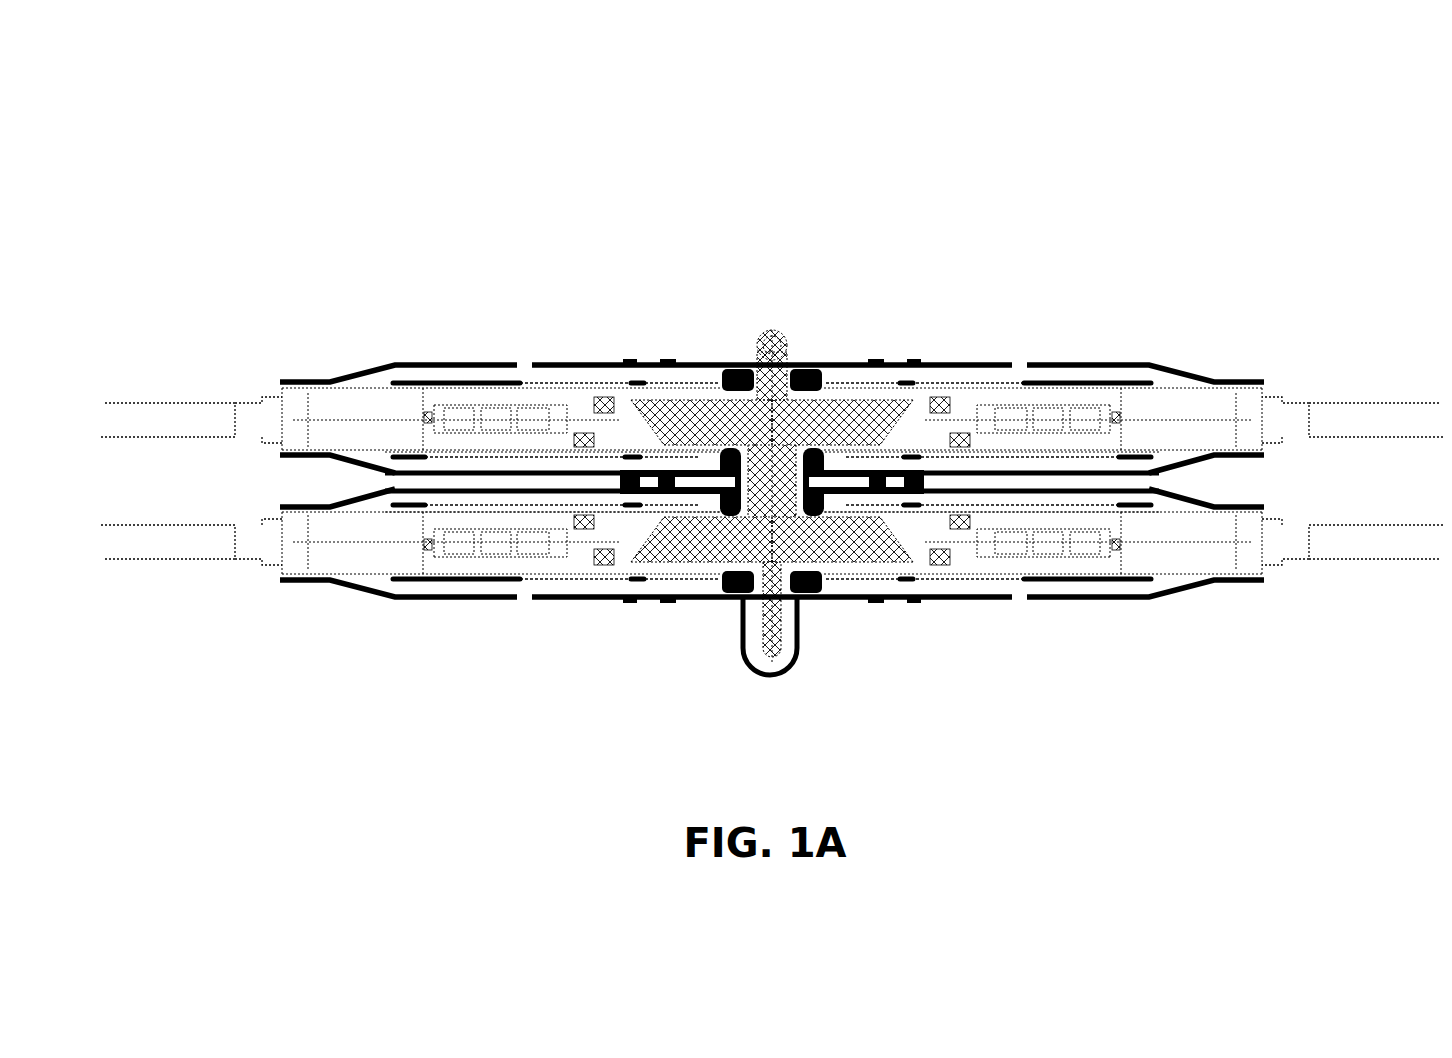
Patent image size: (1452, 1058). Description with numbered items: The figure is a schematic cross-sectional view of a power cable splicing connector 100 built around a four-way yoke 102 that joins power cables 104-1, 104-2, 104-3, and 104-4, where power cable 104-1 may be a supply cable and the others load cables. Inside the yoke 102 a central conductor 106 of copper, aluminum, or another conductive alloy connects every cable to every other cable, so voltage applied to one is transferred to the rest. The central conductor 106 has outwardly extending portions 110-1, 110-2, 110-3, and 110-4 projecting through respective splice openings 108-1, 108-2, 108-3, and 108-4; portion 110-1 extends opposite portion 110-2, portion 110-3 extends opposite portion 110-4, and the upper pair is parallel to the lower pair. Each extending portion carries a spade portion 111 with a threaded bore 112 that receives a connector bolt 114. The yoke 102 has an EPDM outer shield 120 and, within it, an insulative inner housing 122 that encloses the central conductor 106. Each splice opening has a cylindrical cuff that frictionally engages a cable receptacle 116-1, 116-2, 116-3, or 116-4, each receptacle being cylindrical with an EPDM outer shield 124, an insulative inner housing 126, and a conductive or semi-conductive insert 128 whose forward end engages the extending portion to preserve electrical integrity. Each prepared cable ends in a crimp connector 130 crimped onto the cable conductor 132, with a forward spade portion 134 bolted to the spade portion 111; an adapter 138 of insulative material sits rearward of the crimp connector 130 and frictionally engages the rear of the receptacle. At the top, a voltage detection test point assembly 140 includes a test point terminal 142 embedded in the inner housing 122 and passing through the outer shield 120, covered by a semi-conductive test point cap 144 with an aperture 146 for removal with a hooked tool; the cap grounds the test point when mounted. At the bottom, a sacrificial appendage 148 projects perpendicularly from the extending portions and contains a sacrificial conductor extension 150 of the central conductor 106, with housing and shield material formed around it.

The power cable splicing connector 100 is at (938, 245).
The four-way yoke 102 is at (817, 395).
The power cable 104-1 is at (195, 415).
The power cable 104-2 is at (1376, 412).
The power cable 104-3 is at (187, 557).
The power cable 104-4 is at (1360, 560).
The central conductor 106 is at (743, 582).
The splice opening 108-1 is at (709, 386).
The splice opening 108-2 is at (842, 388).
The splice opening 108-3 is at (693, 580).
The splice opening 108-4 is at (837, 582).
The outwardly extending portion 110-1 is at (643, 412).
The outwardly extending portion 110-2 is at (885, 417).
The outwardly extending portion 110-3 is at (648, 555).
The outwardly extending portion 110-4 is at (898, 555).
The spade portion 111 is at (584, 435).
The threaded bore 112 is at (594, 440).
The connector bolt 114 is at (604, 398).
The cable receptacle 116-1 is at (425, 338).
The cable receptacle 116-2 is at (1122, 338).
The cable receptacle 116-3 is at (435, 620).
The cable receptacle 116-4 is at (1092, 620).
The outer shield 120 is at (747, 390).
The insulative inner housing 122 is at (737, 400).
The outer shield 124 is at (1175, 372).
The insulative inner housing 126 is at (452, 378).
The insert 128 is at (495, 385).
The crimp connector 130 is at (492, 428).
The cable conductor 132 is at (424, 418).
The forward spade portion 134 is at (613, 540).
The adapter 138 is at (343, 400).
The voltage detection test point assembly 140 is at (781, 323).
The test point terminal 142 is at (753, 362).
The test point cap 144 is at (792, 362).
The aperture 146 is at (768, 347).
The sacrificial appendage 148 is at (802, 664).
The sacrificial conductor extension 150 is at (770, 630).